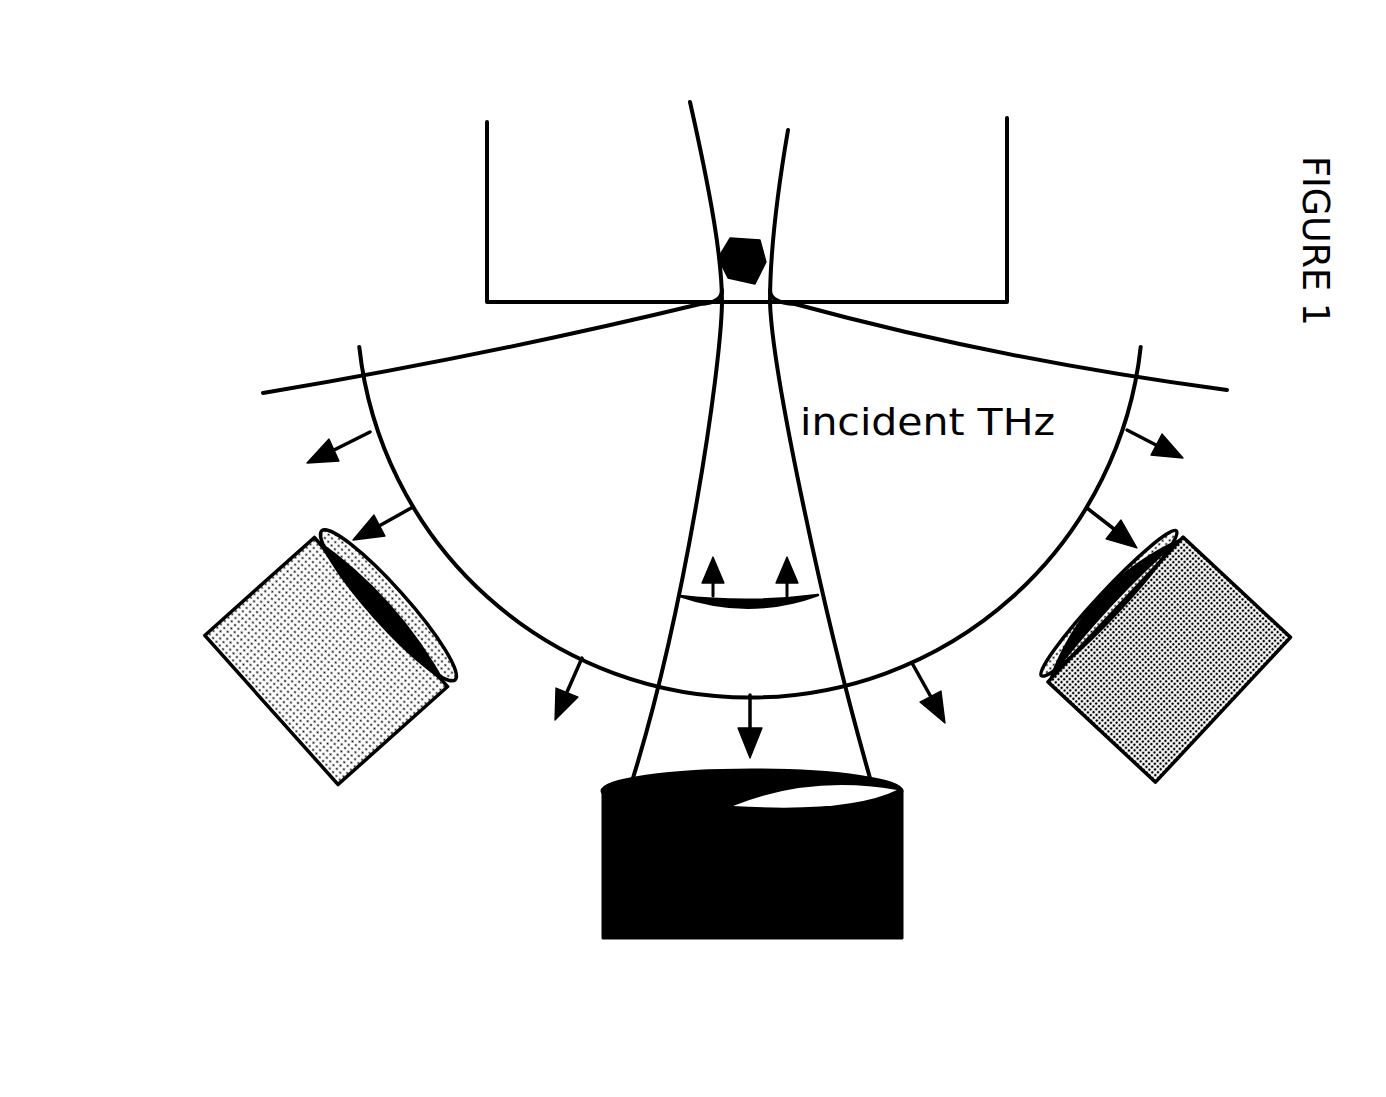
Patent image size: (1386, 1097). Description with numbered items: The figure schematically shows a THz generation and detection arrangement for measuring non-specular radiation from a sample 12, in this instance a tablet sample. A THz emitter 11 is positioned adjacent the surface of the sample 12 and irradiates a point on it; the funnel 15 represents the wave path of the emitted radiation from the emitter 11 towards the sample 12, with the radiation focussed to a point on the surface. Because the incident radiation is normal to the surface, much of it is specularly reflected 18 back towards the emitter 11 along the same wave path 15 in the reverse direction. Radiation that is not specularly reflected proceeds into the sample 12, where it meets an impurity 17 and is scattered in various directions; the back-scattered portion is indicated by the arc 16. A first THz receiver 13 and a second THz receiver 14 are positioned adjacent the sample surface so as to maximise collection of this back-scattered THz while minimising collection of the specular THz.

The THz emitter 11 is at (602, 867).
The sample 12 is at (982, 240).
The first THz receiver 13 is at (300, 682).
The second THz receiver 14 is at (1197, 711).
The funnel 15 is at (805, 597).
The arc 16 is at (417, 360).
The impurity 17 is at (727, 243).
The specularly reflected radiation 18 is at (692, 692).